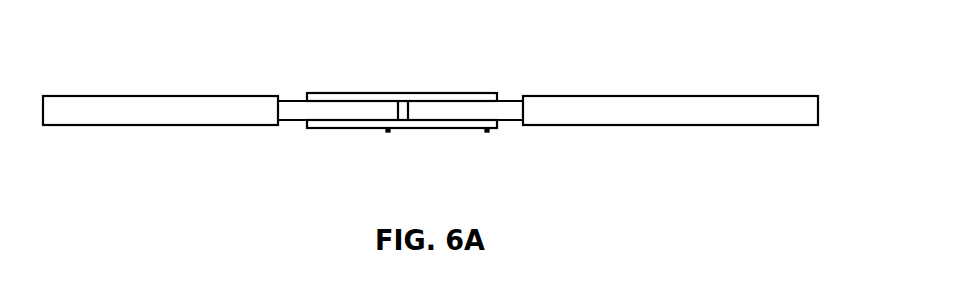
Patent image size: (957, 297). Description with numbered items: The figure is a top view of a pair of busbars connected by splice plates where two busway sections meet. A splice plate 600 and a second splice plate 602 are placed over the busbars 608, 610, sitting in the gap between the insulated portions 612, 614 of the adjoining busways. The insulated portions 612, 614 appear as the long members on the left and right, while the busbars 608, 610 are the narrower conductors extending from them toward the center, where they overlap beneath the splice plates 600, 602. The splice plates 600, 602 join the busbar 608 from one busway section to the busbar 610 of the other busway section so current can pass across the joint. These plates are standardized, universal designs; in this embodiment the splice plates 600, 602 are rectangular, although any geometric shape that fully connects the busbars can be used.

The splice plate 600 is at (380, 93).
The splice plate 602 is at (438, 128).
The busbar 608 is at (510, 101).
The busbar 610 is at (293, 101).
The insulated portion 612 is at (660, 96).
The insulated portion 614 is at (162, 96).